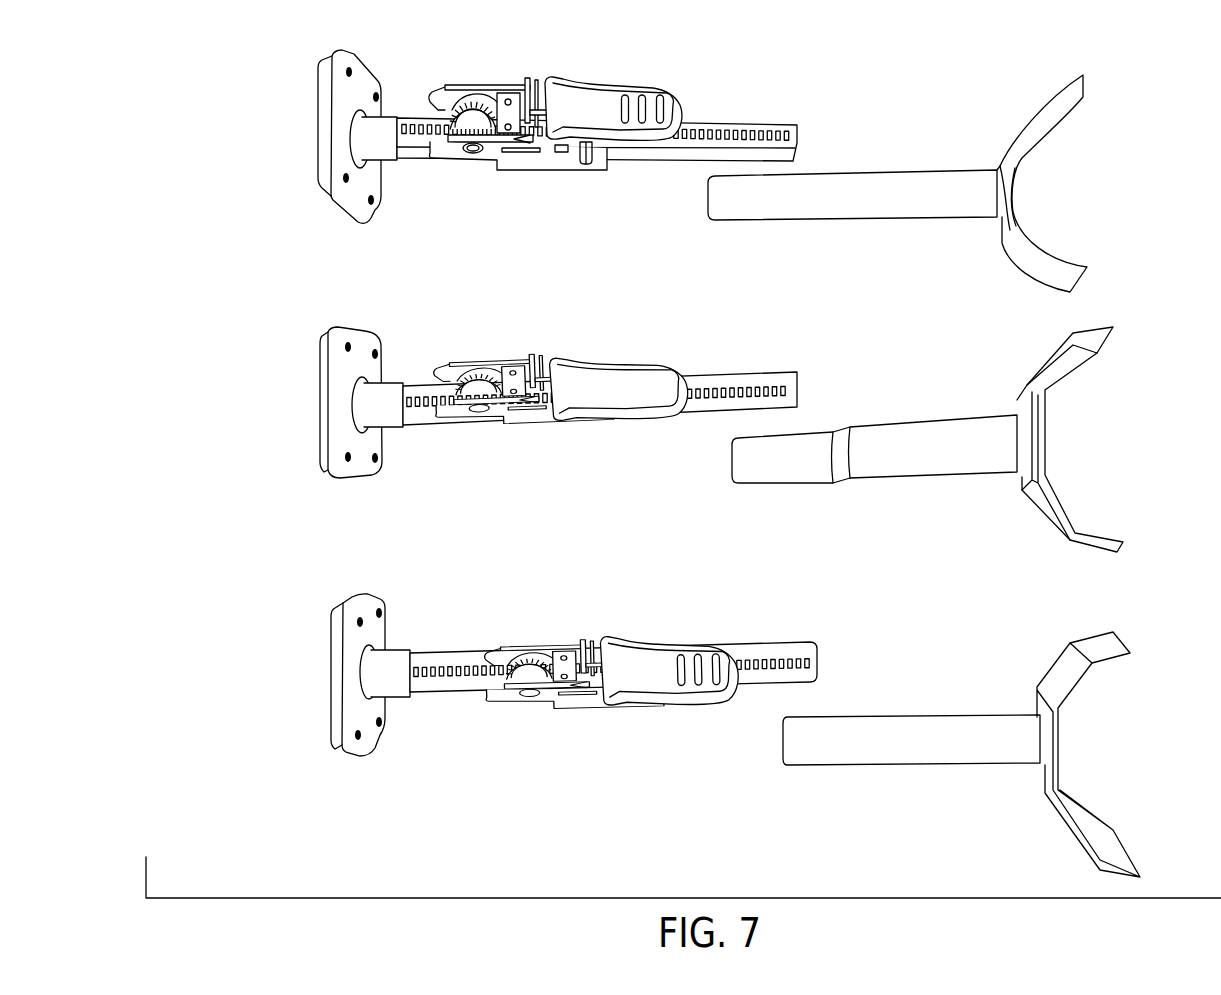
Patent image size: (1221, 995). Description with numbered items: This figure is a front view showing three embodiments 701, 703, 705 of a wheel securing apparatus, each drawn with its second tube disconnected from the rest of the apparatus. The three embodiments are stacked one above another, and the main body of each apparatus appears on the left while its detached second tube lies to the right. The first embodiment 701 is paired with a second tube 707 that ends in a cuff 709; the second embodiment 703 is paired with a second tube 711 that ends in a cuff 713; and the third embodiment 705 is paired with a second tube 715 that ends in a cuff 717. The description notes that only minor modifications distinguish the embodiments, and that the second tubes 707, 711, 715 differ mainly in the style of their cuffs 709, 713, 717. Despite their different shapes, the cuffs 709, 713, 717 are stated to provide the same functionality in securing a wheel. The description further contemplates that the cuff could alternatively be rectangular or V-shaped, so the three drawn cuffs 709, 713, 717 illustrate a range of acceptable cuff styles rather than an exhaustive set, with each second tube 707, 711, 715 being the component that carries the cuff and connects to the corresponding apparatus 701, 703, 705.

The wheel securing apparatus embodiment 701 is at (285, 123).
The wheel securing apparatus embodiment 703 is at (289, 396).
The wheel securing apparatus embodiment 705 is at (303, 675).
The second tube 707 is at (899, 171).
The cuff 709 is at (1025, 214).
The second tube 711 is at (930, 420).
The cuff 713 is at (1057, 499).
The second tube 715 is at (945, 713).
The cuff 717 is at (1113, 848).